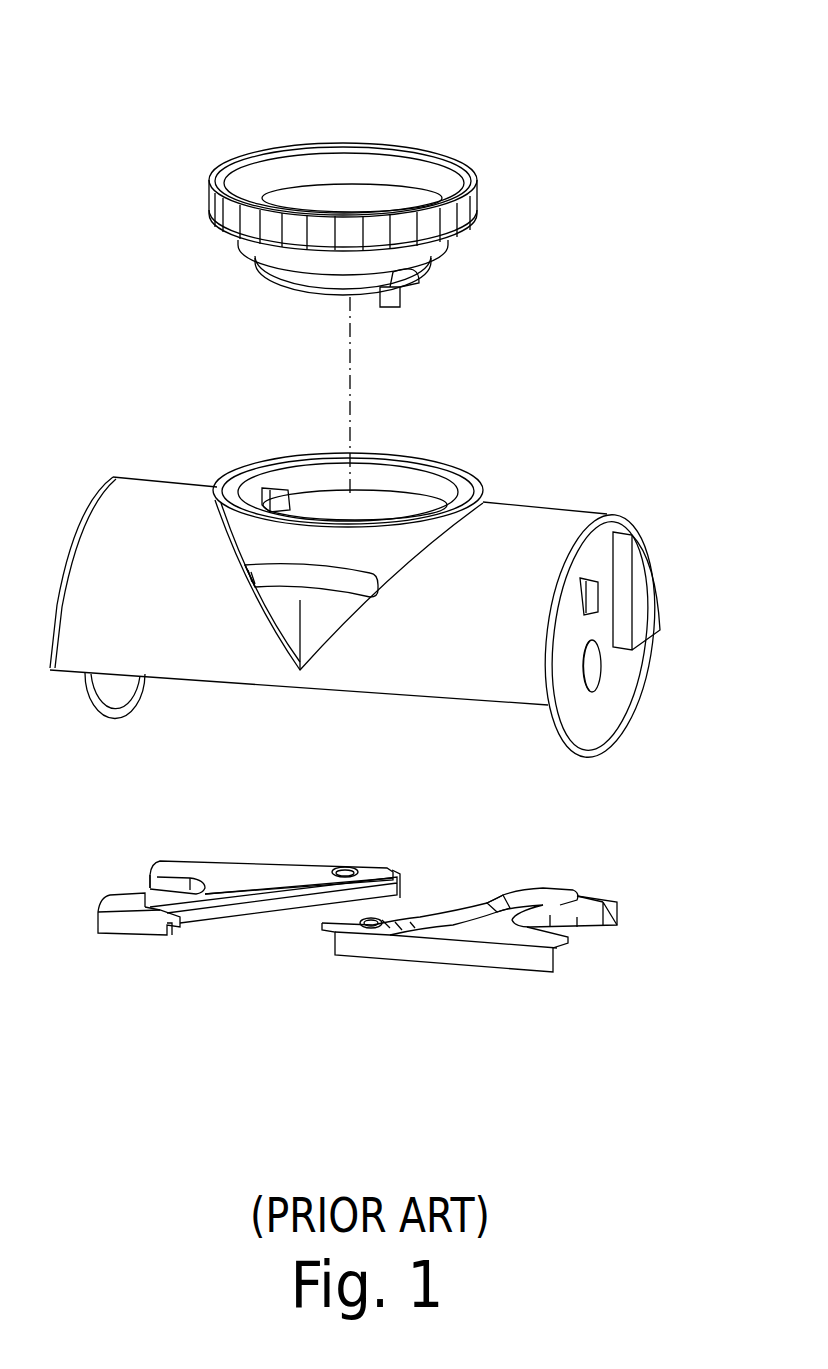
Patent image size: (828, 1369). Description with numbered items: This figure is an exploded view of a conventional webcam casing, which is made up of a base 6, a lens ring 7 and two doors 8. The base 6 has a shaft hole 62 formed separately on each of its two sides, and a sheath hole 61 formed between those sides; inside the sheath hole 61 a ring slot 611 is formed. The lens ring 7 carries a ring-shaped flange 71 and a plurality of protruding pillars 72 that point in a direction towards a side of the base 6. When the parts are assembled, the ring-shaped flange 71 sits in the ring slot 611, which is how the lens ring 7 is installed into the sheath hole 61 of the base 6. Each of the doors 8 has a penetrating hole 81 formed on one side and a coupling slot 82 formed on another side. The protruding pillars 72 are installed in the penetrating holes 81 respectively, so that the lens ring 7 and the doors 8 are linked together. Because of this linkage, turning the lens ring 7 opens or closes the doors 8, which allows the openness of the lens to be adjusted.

The lens ring 7 is at (283, 110).
The ring-shaped flange 71 is at (236, 242).
The protruding pillars 72 is at (397, 308).
The base 6 is at (490, 477).
The sheath hole 61 is at (390, 490).
The ring slot 611 is at (272, 492).
The shaft hole 62 is at (604, 674).
The doors 8 is at (147, 948).
The penetrating hole 81 is at (345, 872).
The coupling slot 82 is at (152, 890).